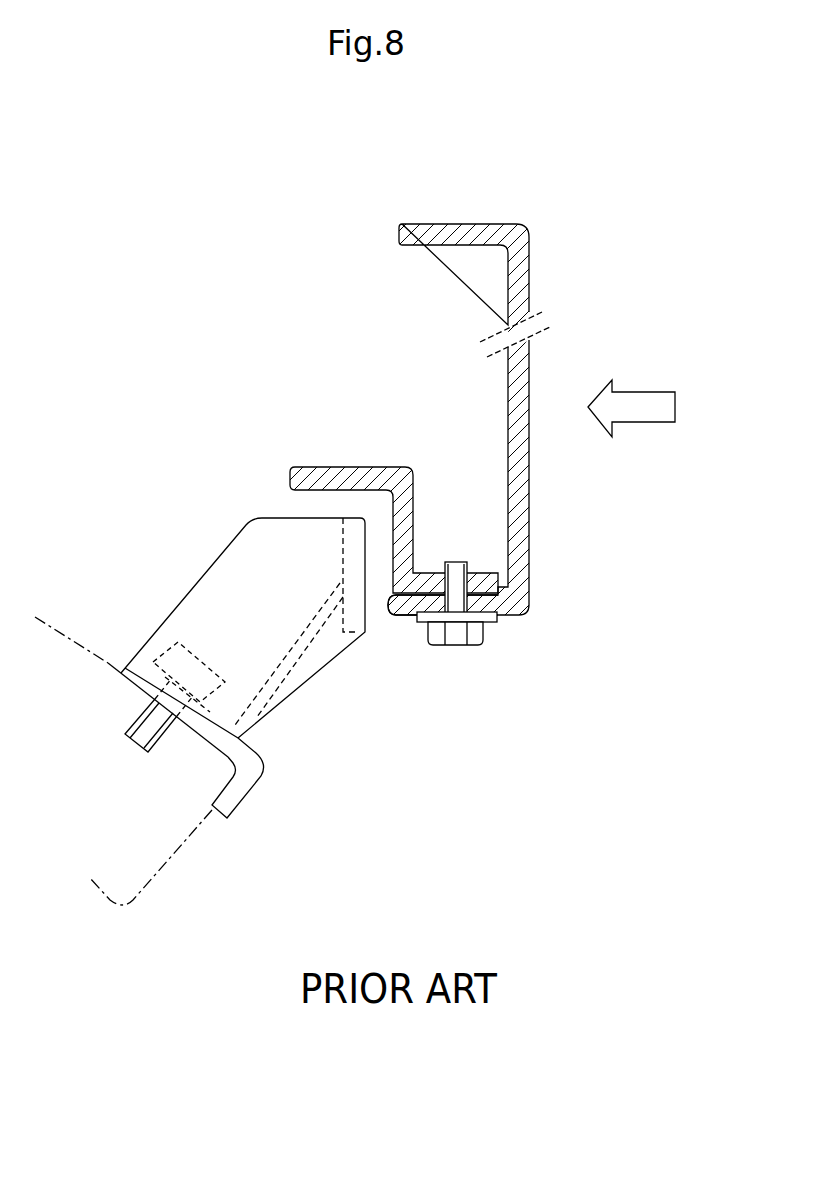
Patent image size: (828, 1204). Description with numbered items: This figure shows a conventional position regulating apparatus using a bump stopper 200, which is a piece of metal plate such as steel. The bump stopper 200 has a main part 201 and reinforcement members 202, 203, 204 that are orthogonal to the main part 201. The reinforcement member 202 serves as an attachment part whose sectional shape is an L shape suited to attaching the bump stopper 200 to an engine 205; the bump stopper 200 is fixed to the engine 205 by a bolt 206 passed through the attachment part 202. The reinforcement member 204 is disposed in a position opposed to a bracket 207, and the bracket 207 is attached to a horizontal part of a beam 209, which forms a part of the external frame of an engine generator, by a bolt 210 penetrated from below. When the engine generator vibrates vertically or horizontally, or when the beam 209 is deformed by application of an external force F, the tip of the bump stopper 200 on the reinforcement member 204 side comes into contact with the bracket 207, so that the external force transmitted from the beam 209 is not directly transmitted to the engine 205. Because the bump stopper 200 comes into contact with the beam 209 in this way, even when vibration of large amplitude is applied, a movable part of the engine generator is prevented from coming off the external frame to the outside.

The bump stopper 200 is at (176, 540).
The main part 201 is at (260, 537).
The reinforcement member 202 is at (265, 766).
The reinforcement member 203 is at (300, 652).
The reinforcement member 204 is at (357, 608).
The engine 205 is at (168, 858).
The bolt 206 is at (170, 660).
The bracket 207 is at (378, 476).
The beam 209 is at (525, 489).
The bolt 210 is at (475, 633).
The external force F is at (632, 423).